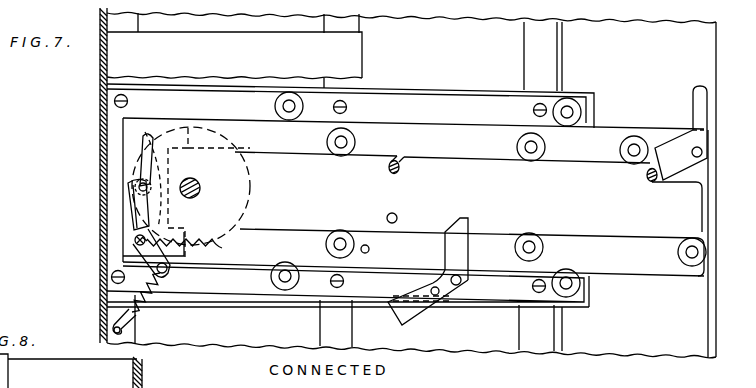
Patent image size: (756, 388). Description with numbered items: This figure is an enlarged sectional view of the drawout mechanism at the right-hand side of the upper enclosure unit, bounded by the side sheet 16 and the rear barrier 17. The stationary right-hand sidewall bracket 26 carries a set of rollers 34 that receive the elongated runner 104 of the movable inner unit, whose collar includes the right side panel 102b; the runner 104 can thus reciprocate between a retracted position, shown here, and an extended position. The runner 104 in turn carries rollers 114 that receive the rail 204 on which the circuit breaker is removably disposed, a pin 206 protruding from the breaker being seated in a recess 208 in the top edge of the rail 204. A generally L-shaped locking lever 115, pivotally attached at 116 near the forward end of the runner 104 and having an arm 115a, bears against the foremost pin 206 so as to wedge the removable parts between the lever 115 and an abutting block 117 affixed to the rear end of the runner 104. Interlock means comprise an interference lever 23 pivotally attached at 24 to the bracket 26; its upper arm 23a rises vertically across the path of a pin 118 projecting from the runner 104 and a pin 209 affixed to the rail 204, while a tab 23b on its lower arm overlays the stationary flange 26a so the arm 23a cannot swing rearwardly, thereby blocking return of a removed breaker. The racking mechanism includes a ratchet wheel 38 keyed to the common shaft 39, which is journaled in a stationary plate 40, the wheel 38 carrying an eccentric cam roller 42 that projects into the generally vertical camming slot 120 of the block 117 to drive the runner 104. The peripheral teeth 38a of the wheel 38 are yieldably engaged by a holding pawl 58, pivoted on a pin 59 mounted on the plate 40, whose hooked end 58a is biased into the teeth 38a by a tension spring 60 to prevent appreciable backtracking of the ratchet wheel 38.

The side sheet 16 is at (485, 347).
The rear barrier 17 is at (100, 281).
The interference lever 23 is at (420, 307).
The upper arm 23a is at (466, 227).
The tab or pin 23b is at (431, 289).
The pivot 24 is at (461, 282).
The sidewall bracket 26 is at (420, 98).
The stationary flange 26a is at (365, 300).
The rollers 34 is at (289, 96).
The ratchet wheel 38 is at (232, 146).
The peripheral teeth 38a is at (214, 249).
The common shaft 39 is at (200, 188).
The stationary plate 40 is at (355, 62).
The eccentric cam roller 42 is at (209, 193).
The holding pawl 58 is at (128, 219).
The hooked end 58a is at (130, 190).
The pin 59 is at (134, 244).
The tension spring 60 is at (145, 303).
The right side panel 102b is at (646, 349).
The runner 104 is at (255, 122).
The rollers 114 is at (327, 142).
The locking lever 115 is at (681, 142).
The lever arm 115a is at (701, 84).
The pivotal attachment 116 is at (692, 154).
The abutting block 117 is at (124, 137).
The pin 118 is at (369, 250).
The camming slot 120 is at (150, 135).
The rail 204 is at (604, 232).
The pin 206 is at (389, 170).
The recess 208 is at (404, 148).
The pin 209 is at (387, 217).